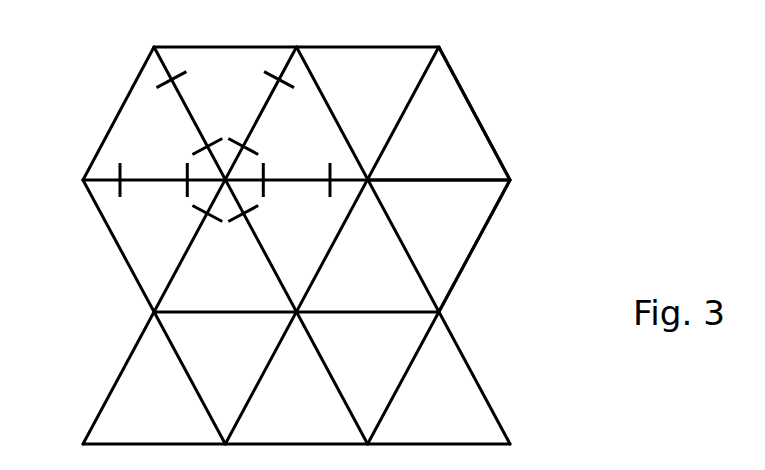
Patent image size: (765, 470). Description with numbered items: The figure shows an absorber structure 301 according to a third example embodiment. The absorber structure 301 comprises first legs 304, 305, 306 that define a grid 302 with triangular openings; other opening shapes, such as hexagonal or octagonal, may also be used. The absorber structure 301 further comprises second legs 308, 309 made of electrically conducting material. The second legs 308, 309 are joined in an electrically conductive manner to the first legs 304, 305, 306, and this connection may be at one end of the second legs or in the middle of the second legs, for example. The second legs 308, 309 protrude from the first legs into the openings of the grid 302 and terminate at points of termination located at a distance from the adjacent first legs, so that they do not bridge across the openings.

The absorber structure 301 is at (743, 70).
The grid 302 is at (565, 259).
The first leg 304 is at (412, 180).
The first leg 305 is at (478, 118).
The first leg 306 is at (489, 225).
The second leg 308 is at (118, 193).
The second leg 309 is at (197, 212).